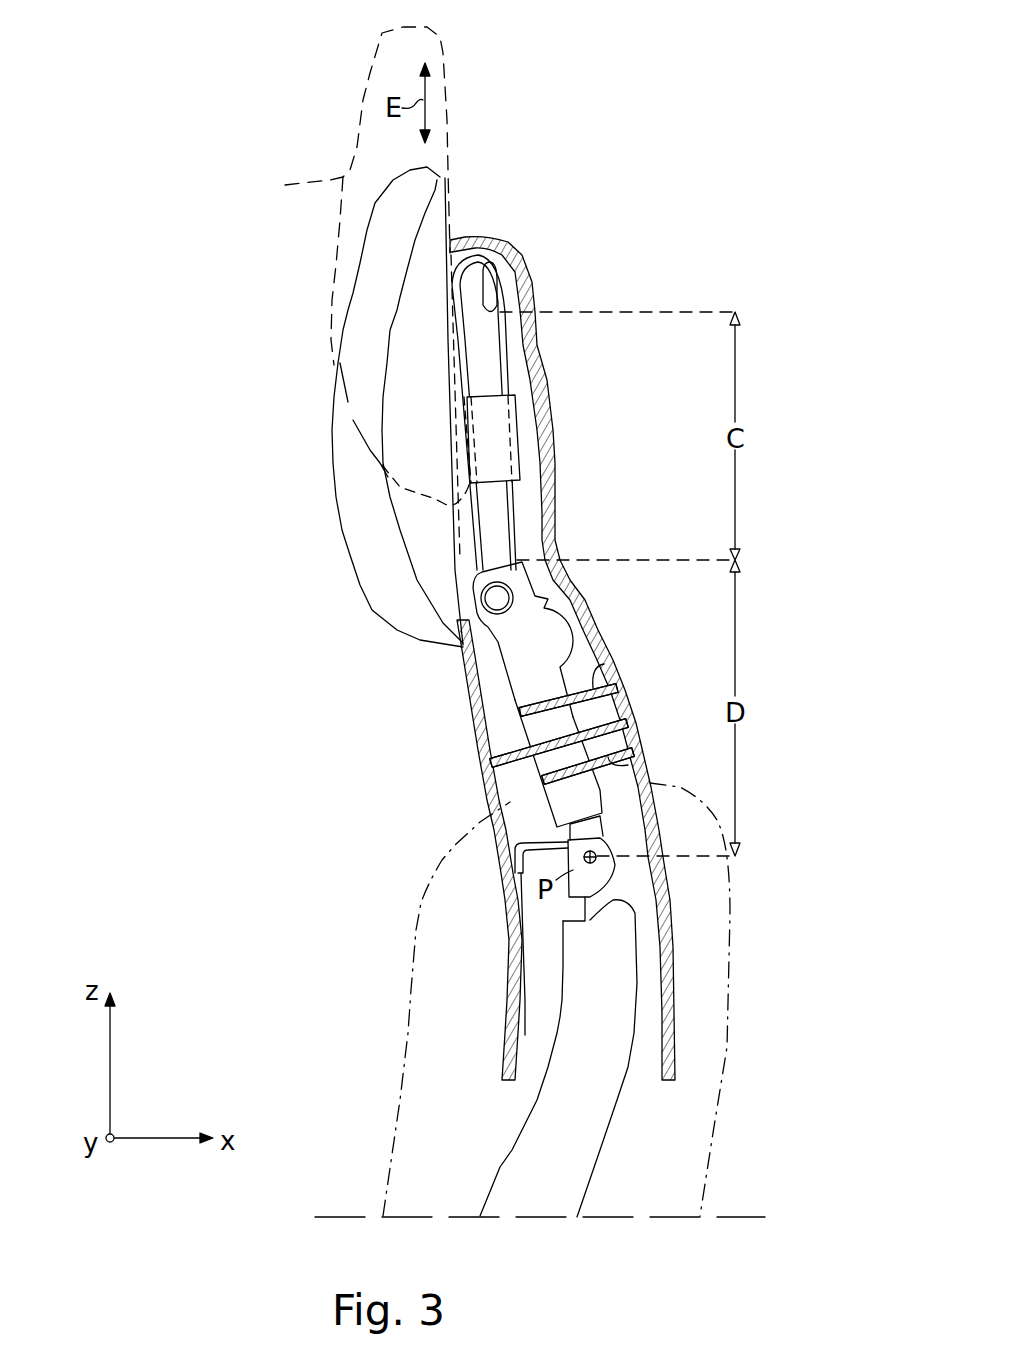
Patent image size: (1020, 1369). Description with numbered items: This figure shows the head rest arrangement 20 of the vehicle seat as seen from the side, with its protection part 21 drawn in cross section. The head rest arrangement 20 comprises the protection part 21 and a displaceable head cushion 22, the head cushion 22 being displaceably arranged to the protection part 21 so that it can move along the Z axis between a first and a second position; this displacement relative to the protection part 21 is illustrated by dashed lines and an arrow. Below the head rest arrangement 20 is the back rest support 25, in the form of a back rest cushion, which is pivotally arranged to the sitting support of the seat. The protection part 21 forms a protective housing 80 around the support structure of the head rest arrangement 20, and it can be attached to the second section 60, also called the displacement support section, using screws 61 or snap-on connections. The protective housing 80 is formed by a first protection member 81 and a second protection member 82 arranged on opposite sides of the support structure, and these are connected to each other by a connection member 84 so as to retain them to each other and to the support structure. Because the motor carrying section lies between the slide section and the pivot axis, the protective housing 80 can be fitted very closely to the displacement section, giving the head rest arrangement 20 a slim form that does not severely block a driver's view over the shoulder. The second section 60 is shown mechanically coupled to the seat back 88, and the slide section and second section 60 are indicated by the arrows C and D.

The head rest arrangement 20 is at (565, 173).
The protection part 21 is at (540, 338).
The head cushion 22 is at (287, 547).
The back rest support 25 is at (452, 1050).
The second section 60 is at (520, 672).
The screws 61 is at (592, 687).
The protective housing 80 is at (564, 468).
The first protection member 81 is at (473, 742).
The second protection member 82 is at (635, 702).
The connection member 84 is at (490, 753).
The seat back 88 is at (612, 882).